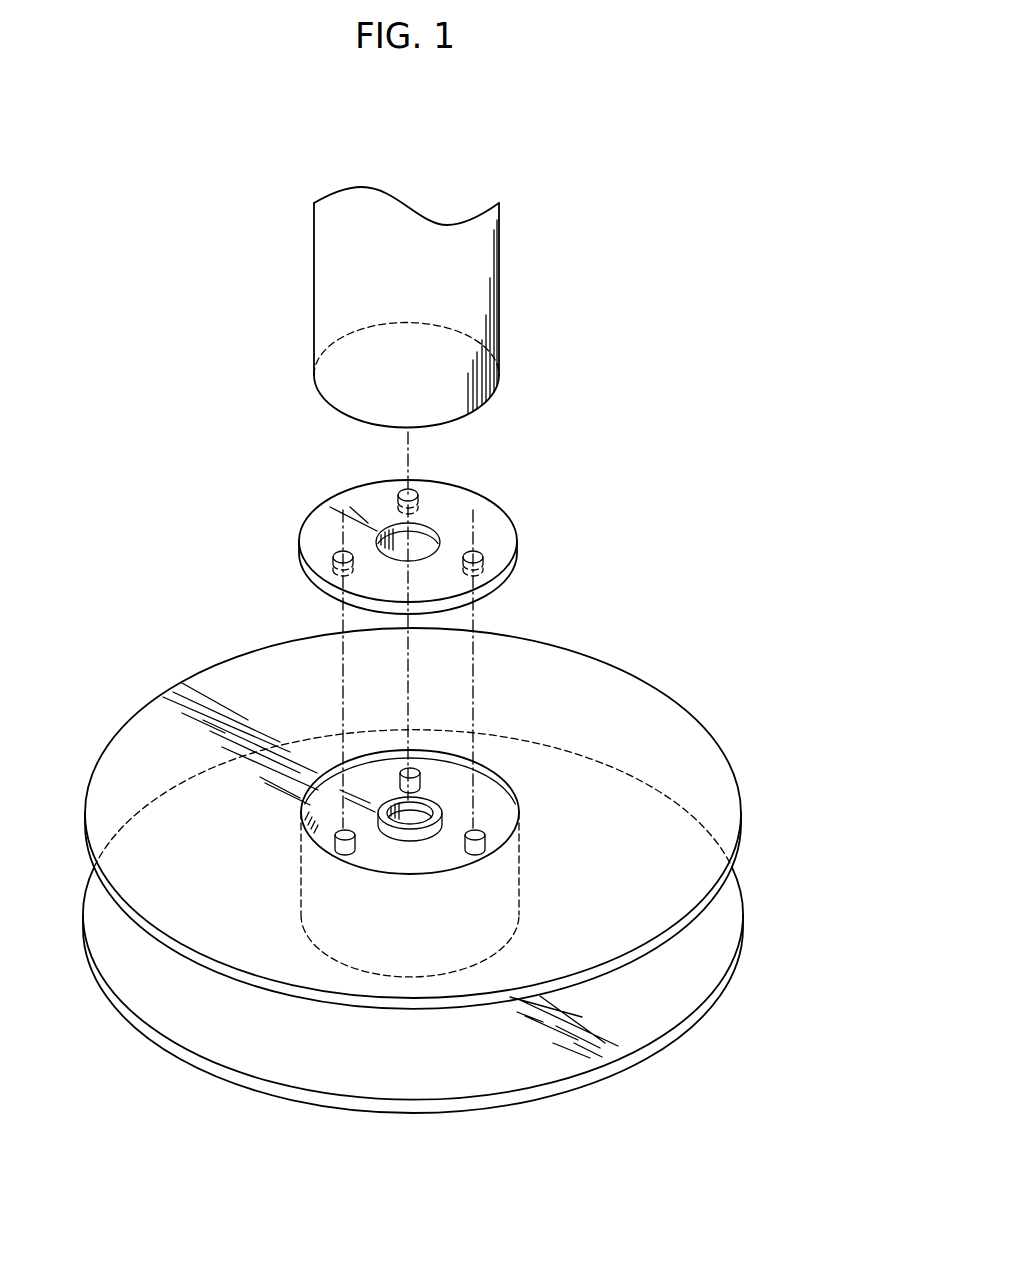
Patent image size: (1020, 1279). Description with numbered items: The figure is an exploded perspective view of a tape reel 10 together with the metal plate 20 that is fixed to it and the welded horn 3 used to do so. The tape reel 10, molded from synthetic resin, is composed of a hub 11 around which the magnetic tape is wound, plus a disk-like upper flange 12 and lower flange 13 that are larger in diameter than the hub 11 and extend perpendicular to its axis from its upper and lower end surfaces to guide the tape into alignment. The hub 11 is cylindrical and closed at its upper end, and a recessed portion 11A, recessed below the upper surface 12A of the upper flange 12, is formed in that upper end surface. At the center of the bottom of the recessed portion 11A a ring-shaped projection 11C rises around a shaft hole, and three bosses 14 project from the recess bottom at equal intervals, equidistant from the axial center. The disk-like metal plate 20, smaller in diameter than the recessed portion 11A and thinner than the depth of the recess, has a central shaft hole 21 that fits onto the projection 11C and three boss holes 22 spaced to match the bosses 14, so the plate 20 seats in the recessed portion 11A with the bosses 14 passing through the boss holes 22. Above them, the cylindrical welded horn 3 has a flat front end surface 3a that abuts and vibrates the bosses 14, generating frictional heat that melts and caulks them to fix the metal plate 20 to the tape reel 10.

The welded horn 3 is at (499, 241).
The front end surface 3a is at (458, 383).
The metal plate 20 is at (478, 485).
The shaft hole 21 is at (423, 543).
The boss hole 22 is at (402, 490).
The tape reel 10 is at (564, 637).
The upper flange 12 is at (690, 714).
The upper surface 12A is at (305, 960).
The lower flange 13 is at (510, 1047).
The hub 11 is at (377, 937).
The recessed portion 11A is at (318, 828).
The ring-shaped projection 11C is at (438, 808).
The boss 14 is at (408, 766).